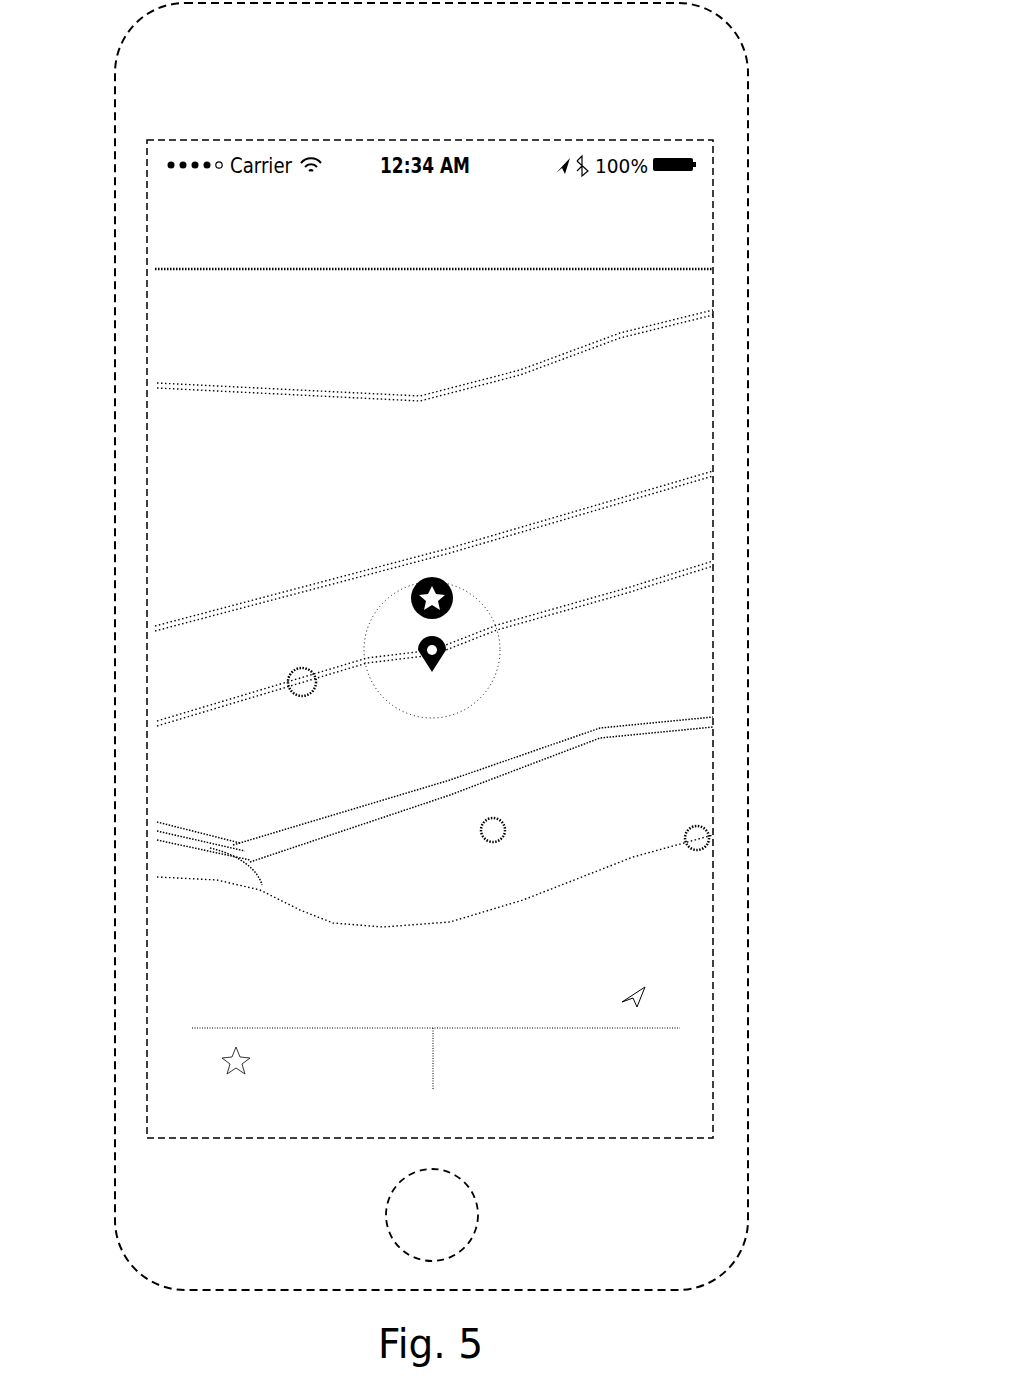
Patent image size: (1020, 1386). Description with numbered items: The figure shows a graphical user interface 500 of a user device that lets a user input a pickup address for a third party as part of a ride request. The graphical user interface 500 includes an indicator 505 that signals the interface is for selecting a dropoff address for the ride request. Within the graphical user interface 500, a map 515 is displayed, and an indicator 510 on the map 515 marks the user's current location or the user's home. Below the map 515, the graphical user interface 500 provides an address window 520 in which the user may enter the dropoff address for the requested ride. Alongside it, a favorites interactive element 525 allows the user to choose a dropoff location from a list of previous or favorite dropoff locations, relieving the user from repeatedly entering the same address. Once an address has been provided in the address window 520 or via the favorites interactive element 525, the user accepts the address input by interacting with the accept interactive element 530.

The graphical user interface 500 is at (833, 32).
The indicator 505 is at (540, 228).
The indicator of current location 510 is at (442, 655).
The map 515 is at (660, 420).
The address window 520 is at (656, 992).
The favorites interactive element 525 is at (207, 1055).
The accept interactive element 530 is at (656, 1060).